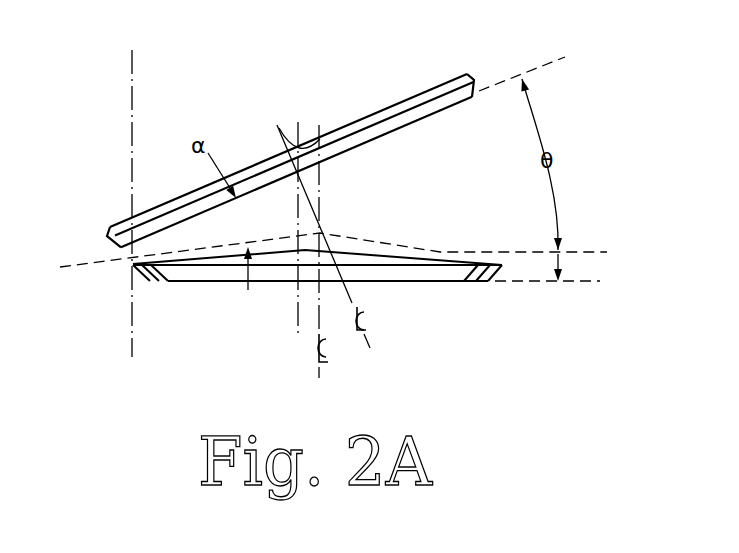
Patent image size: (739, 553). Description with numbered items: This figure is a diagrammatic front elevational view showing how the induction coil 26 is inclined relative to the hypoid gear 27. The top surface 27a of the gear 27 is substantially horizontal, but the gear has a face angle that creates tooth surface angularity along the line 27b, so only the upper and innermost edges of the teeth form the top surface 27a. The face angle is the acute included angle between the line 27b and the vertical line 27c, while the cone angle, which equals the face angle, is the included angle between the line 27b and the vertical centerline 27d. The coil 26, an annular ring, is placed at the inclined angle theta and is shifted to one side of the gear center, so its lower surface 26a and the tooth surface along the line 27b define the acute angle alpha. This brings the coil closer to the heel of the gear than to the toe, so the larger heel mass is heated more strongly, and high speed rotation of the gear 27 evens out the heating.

The induction coil 26 is at (365, 118).
The lower surface of the coil 26a is at (450, 108).
The hypoid gear 27 is at (182, 273).
The top surface of gear 27a is at (428, 251).
The tooth surface angularity line 27b is at (282, 244).
The vertical line 27c is at (131, 105).
The vertical centerline 27d is at (298, 141).